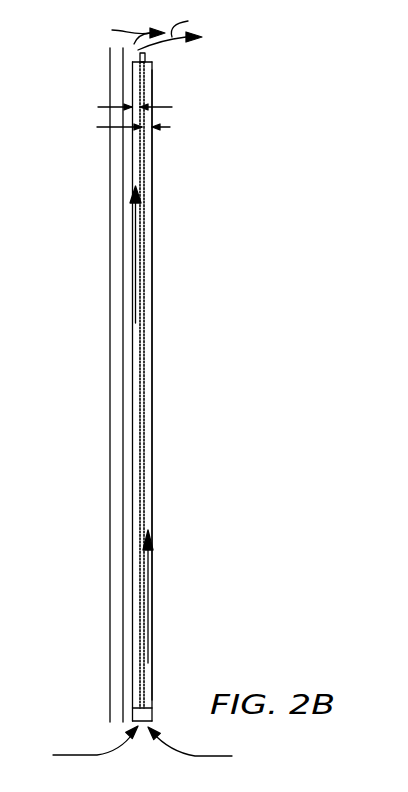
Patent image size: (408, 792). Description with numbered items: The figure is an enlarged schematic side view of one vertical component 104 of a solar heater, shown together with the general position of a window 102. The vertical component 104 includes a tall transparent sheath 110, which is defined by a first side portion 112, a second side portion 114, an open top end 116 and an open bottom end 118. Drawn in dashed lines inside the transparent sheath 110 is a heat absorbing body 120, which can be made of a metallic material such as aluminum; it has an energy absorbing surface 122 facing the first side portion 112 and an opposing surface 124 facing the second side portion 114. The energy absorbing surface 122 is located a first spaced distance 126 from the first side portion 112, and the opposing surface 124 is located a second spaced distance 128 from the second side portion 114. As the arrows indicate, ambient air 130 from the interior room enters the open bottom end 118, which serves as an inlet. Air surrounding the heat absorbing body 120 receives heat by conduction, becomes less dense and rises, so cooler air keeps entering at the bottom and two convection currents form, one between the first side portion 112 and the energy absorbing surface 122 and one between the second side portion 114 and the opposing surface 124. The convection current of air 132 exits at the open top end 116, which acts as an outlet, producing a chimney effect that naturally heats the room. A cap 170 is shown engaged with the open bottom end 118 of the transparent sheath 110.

The window 102 is at (110, 263).
The vertical component 104 is at (205, 172).
The transparent sheath 110 is at (152, 465).
The first side portion 112 is at (132, 350).
The second side portion 114 is at (152, 268).
The open top end 116 is at (152, 63).
The open bottom end 118 is at (148, 723).
The heat absorbing body 120 is at (152, 310).
The energy absorbing surface 122 is at (133, 403).
The opposing surface 124 is at (152, 397).
The first spaced distance 126 is at (110, 107).
The second spaced distance 128 is at (170, 127).
The ambient air 130 is at (148, 737).
The convection current of air 132 is at (137, 30).
The cap 170 is at (135, 710).